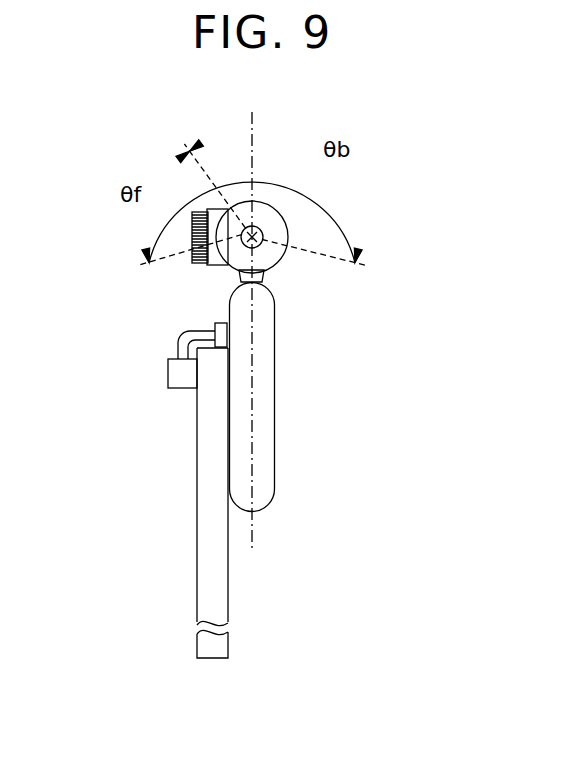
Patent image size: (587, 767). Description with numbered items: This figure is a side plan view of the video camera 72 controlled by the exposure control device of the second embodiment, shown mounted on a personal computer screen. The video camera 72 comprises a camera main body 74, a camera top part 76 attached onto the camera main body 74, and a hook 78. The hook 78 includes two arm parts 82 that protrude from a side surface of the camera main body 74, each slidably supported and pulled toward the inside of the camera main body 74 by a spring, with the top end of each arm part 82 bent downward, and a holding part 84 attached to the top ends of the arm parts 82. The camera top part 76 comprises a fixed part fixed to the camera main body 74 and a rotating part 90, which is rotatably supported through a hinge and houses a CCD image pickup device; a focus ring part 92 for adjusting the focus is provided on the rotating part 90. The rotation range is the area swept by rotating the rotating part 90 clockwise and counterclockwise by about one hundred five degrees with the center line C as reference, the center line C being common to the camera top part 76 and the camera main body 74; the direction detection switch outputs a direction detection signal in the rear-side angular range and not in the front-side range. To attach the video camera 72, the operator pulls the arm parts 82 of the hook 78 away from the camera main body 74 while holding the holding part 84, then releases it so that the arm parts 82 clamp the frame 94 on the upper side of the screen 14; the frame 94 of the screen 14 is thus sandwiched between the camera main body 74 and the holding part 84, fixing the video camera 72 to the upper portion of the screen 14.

The screen 14 is at (197, 562).
The video camera 72 is at (352, 348).
The camera main body 74 is at (275, 423).
The camera top part 76 is at (290, 272).
The hook 78 is at (160, 398).
The arm part 82 is at (186, 331).
The holding part 84 is at (168, 368).
The rotating part 90 is at (262, 217).
The focus ring part 92 is at (198, 265).
The frame 94 is at (212, 481).
The center line C is at (252, 520).